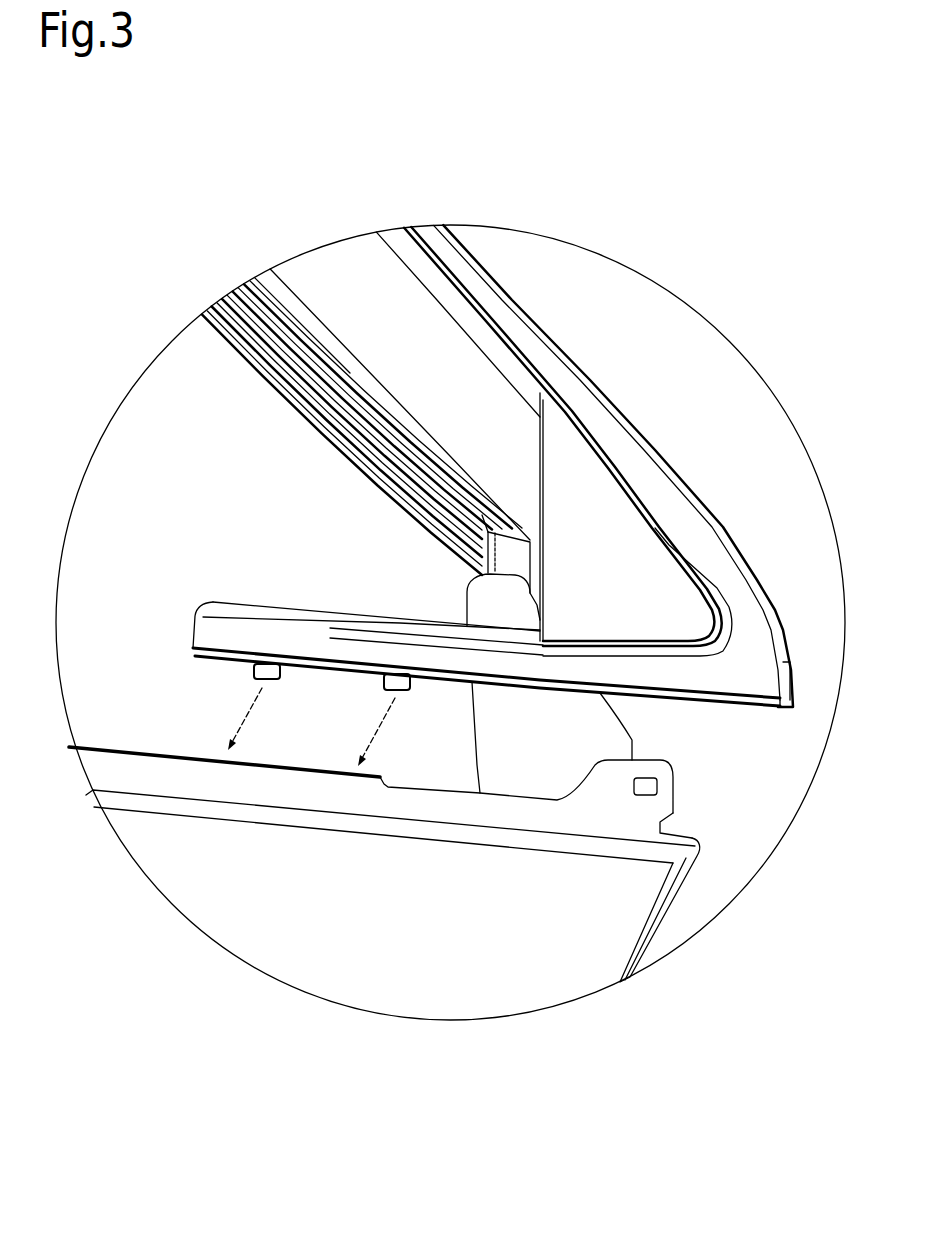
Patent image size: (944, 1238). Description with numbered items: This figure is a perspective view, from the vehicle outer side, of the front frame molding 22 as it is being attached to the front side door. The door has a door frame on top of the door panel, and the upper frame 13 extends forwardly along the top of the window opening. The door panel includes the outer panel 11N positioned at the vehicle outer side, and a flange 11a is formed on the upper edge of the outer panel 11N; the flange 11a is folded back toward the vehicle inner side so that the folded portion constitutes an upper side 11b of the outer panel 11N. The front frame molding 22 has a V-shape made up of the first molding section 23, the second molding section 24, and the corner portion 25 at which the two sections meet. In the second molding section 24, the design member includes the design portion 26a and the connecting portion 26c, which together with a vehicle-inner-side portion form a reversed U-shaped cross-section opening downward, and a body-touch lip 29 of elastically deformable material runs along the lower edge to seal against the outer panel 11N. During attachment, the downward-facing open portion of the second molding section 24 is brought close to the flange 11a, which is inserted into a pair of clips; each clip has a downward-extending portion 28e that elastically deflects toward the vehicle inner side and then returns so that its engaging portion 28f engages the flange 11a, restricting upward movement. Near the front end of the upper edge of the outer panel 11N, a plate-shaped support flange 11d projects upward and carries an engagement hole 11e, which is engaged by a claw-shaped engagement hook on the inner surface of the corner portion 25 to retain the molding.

The flange 11a is at (130, 773).
The upper side 11b is at (147, 750).
The support flange 11d is at (675, 812).
The engagement hole 11e is at (645, 780).
The outer panel 11N is at (600, 912).
The upper frame 13 is at (266, 393).
The front frame molding 22 is at (677, 410).
The first molding section 23 is at (552, 322).
The second molding section 24 is at (238, 590).
The corner portion 25 is at (733, 519).
The design portion 26a is at (332, 643).
The connecting portion 26c is at (410, 625).
The downward-extending portion 28e is at (252, 668).
The engaging portion 28f is at (264, 683).
The body-touch lip 29 is at (730, 706).